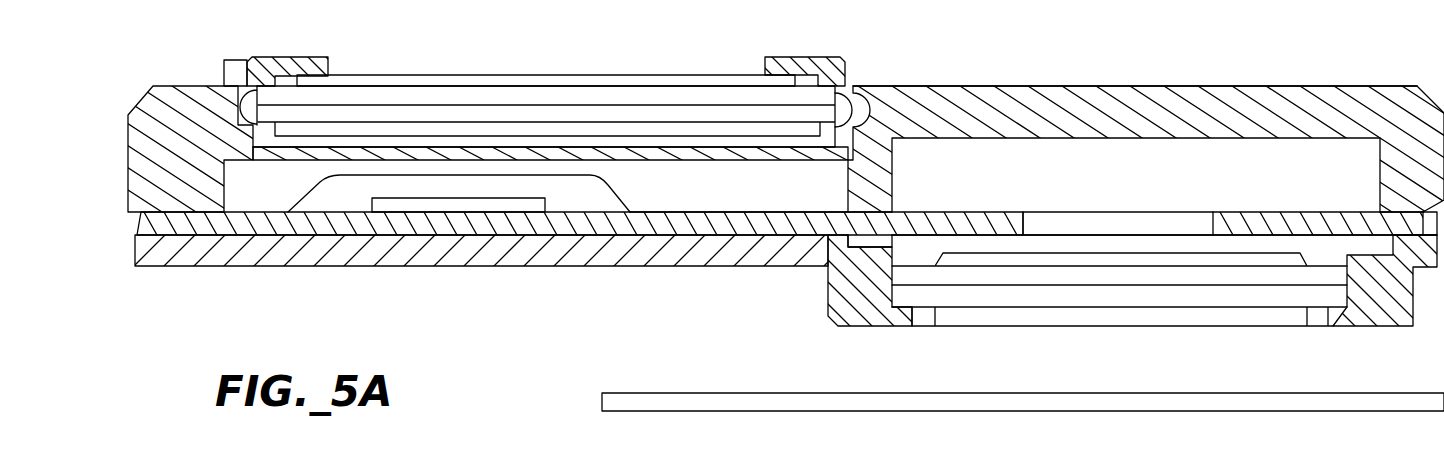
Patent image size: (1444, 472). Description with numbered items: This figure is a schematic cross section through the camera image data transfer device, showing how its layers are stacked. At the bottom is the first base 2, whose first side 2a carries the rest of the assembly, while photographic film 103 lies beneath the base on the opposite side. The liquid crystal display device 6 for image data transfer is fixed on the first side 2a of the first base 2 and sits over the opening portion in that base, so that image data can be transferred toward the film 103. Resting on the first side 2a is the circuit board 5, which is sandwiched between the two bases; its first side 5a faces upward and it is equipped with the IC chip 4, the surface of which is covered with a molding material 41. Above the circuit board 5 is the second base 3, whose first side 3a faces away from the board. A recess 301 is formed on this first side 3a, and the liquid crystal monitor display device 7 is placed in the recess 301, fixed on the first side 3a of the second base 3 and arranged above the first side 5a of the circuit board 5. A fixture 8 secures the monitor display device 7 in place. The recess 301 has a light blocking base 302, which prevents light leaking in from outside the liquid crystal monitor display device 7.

The first base 2 is at (487, 258).
The first side of first base 2a is at (893, 240).
The second base 3 is at (1150, 110).
The first side of second base 3a is at (957, 86).
The IC chip 4 is at (428, 222).
The molding material 41 is at (566, 200).
The circuit board 5 is at (333, 225).
The first side of circuit board 5a is at (717, 212).
The display device for image data transfer 6 is at (1208, 297).
The liquid crystal monitor display device 7 is at (489, 85).
The fixture 8 is at (285, 60).
The film 103 is at (816, 400).
The recess 301 is at (853, 133).
The light blocking base 302 is at (706, 147).